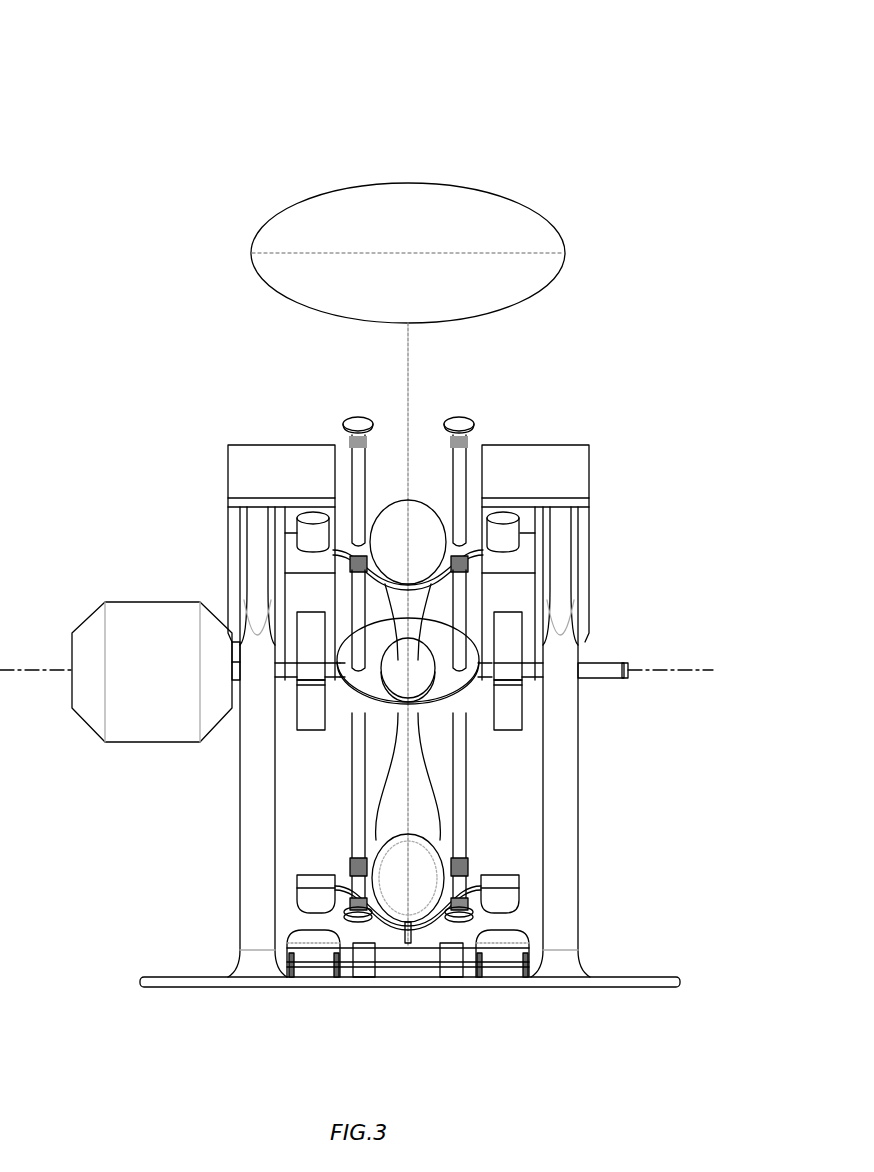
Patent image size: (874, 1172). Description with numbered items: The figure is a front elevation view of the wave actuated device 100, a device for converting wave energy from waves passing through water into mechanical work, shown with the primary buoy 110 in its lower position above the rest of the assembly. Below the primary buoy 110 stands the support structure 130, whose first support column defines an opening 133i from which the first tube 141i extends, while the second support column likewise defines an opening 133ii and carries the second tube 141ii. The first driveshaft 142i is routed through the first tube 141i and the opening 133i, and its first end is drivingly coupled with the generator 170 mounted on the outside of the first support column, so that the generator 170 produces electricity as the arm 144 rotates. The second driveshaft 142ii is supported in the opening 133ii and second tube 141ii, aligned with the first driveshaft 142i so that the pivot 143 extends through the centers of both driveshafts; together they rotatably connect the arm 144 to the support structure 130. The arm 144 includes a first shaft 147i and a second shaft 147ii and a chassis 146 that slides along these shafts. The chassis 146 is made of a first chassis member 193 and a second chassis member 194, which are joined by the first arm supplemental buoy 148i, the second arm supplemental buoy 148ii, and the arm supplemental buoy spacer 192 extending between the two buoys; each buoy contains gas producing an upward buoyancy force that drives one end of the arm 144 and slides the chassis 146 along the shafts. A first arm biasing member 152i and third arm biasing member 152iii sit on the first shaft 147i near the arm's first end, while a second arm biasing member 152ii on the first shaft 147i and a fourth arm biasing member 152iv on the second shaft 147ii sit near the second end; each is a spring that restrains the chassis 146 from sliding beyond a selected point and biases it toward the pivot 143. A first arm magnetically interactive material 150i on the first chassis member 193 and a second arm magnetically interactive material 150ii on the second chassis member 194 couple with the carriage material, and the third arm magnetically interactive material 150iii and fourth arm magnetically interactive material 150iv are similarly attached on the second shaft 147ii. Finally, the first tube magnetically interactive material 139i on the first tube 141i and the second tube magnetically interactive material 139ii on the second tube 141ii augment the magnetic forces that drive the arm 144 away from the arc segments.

The wave actuated device 100 is at (76, 68).
The primary buoy 110 is at (406, 183).
The support structure 130 is at (598, 791).
The opening 133i is at (310, 728).
The opening 133ii is at (508, 728).
The first tube magnetically interactive material 139i is at (315, 625).
The second tube magnetically interactive material 139ii is at (512, 625).
The first tube 141i is at (290, 622).
The second tube 141ii is at (598, 663).
The first driveshaft 142i is at (330, 718).
The second driveshaft 142ii is at (628, 679).
The pivot 143 is at (705, 660).
The arm 144 is at (415, 458).
The chassis 146 is at (448, 942).
The first shaft 147i is at (352, 821).
The second shaft 147ii is at (467, 778).
The first arm supplemental buoy 148i is at (395, 511).
The second arm supplemental buoy 148ii is at (403, 935).
The first arm magnetically interactive material 150i is at (308, 518).
The second arm magnetically interactive material 150ii is at (300, 900).
The third arm magnetically interactive material 150iii is at (506, 518).
The fourth arm magnetically interactive material 150iv is at (515, 900).
The first arm biasing member 152i is at (347, 437).
The second arm biasing member 152ii is at (345, 920).
The third arm biasing member 152iii is at (470, 437).
The fourth arm biasing member 152iv is at (471, 920).
The generator 170 is at (147, 742).
The arm supplemental buoy spacer 192 is at (397, 787).
The first chassis member 193 is at (451, 522).
The second chassis member 194 is at (441, 921).